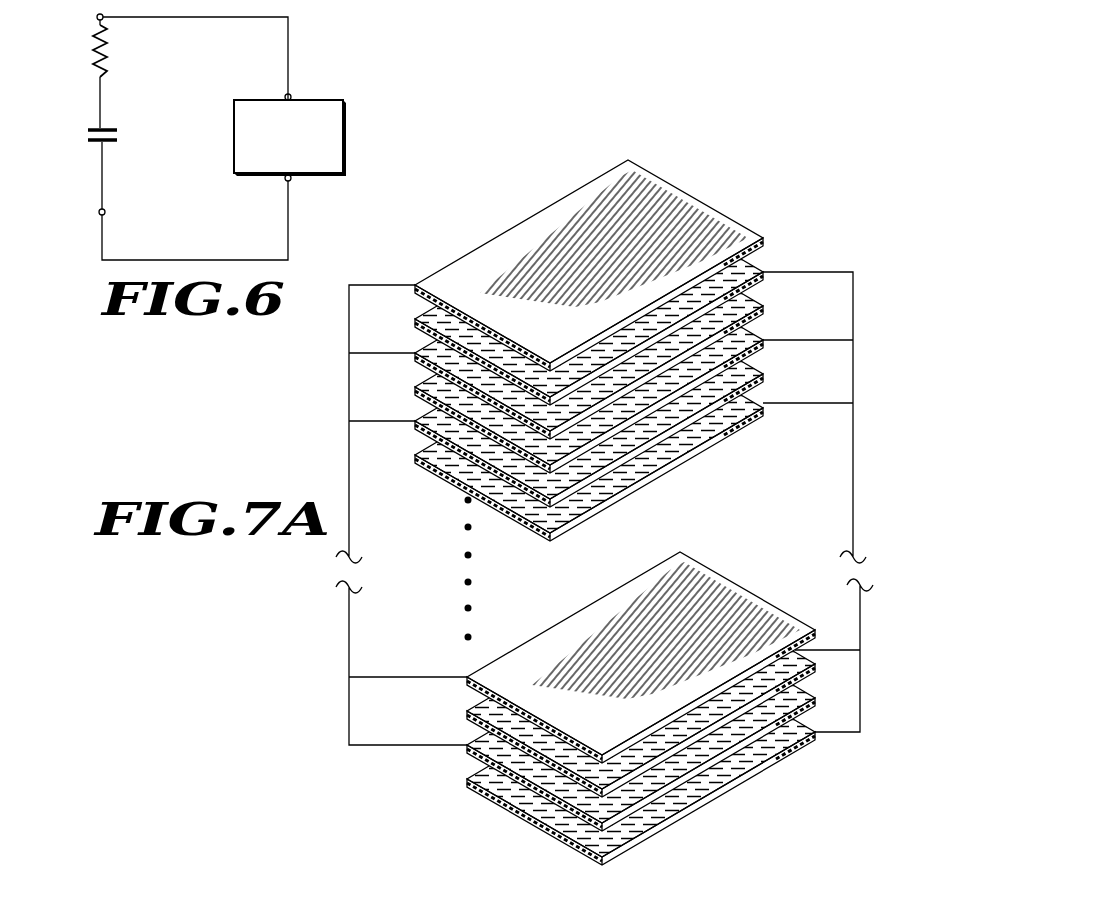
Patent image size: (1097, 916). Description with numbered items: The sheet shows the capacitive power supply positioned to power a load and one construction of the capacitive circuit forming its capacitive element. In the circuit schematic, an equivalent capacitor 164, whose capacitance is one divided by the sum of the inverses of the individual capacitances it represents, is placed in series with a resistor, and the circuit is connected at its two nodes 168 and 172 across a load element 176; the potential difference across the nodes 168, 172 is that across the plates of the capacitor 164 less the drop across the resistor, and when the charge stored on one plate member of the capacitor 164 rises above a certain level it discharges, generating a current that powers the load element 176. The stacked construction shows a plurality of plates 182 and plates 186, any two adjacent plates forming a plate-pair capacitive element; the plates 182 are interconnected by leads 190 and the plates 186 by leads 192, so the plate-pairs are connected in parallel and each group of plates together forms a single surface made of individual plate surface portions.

In FIG. 6, the capacitor 164 is at (98, 128).
In FIG. 6, the node 168 is at (97, 17).
In FIG. 6, the node 172 is at (107, 212).
In FIG. 6, the load element 176 is at (302, 178).
In FIG. 7A, the plates 182 is at (467, 292).
In FIG. 7A, the plates 186 is at (762, 255).
In FIG. 7A, the leads 190 is at (349, 338).
In FIG. 7A, the leads 192 is at (823, 403).